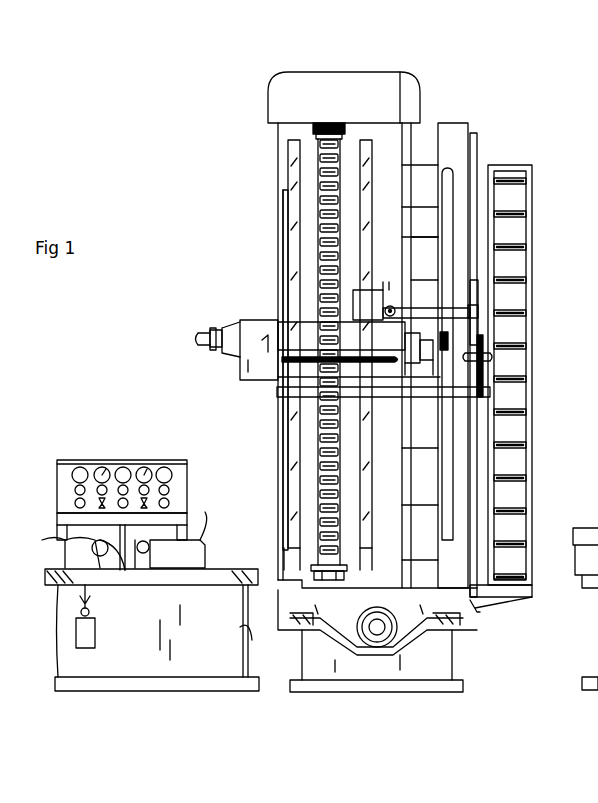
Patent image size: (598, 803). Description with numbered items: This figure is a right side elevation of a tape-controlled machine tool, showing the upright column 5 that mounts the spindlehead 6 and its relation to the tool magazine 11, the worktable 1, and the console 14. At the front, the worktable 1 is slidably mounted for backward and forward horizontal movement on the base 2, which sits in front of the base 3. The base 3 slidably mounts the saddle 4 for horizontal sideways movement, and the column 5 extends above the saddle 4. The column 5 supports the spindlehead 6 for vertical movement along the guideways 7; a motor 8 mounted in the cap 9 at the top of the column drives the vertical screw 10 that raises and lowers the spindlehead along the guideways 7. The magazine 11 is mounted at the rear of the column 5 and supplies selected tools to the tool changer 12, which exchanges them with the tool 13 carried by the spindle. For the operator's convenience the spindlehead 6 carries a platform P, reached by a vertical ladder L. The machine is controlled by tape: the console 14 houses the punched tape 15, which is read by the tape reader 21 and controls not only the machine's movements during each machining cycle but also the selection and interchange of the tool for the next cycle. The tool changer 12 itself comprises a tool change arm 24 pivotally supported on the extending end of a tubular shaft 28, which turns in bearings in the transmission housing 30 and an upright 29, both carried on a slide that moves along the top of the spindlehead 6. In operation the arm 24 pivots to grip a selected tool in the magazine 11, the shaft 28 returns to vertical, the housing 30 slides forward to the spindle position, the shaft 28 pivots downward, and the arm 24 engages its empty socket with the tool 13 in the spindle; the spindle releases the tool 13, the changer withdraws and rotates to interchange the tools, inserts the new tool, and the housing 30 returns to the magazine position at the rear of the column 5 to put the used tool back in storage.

The worktable 1 is at (193, 552).
The base 2 is at (225, 627).
The base 3 is at (433, 652).
The saddle 4 is at (480, 607).
The column 5 is at (285, 175).
The spindlehead 6 is at (257, 327).
The guideways 7 is at (292, 158).
The motor 8 is at (322, 124).
The cap 9 is at (410, 102).
The vertical screw 10 is at (338, 147).
The magazine 11 is at (483, 153).
The tool changer 12 is at (431, 274).
The tool 13 is at (193, 332).
The console 14 is at (112, 465).
The punched tape 15 is at (83, 560).
The tape reader 21 is at (130, 548).
The tool change arm 24 is at (480, 310).
The tubular shaft 28 is at (422, 315).
The upright 29 is at (392, 300).
The transmission housing 30 is at (367, 308).
The platform P is at (280, 397).
The ladder L is at (532, 354).